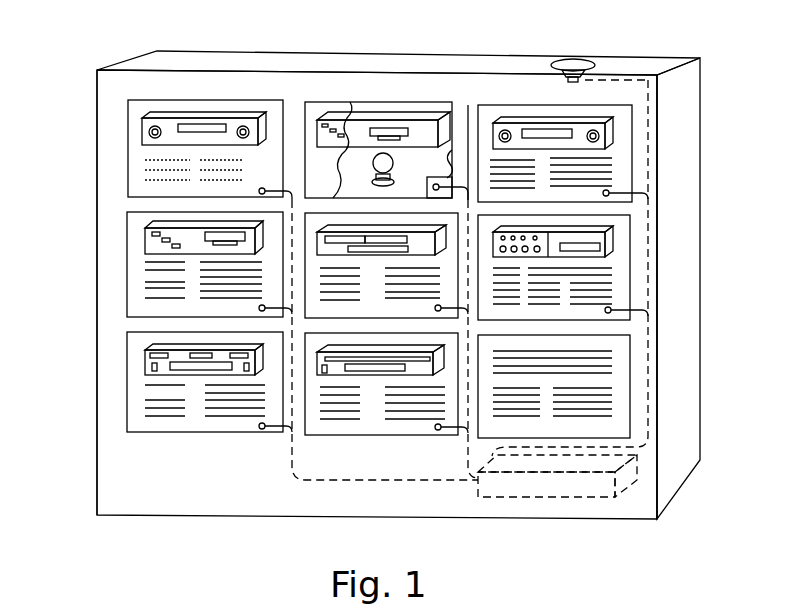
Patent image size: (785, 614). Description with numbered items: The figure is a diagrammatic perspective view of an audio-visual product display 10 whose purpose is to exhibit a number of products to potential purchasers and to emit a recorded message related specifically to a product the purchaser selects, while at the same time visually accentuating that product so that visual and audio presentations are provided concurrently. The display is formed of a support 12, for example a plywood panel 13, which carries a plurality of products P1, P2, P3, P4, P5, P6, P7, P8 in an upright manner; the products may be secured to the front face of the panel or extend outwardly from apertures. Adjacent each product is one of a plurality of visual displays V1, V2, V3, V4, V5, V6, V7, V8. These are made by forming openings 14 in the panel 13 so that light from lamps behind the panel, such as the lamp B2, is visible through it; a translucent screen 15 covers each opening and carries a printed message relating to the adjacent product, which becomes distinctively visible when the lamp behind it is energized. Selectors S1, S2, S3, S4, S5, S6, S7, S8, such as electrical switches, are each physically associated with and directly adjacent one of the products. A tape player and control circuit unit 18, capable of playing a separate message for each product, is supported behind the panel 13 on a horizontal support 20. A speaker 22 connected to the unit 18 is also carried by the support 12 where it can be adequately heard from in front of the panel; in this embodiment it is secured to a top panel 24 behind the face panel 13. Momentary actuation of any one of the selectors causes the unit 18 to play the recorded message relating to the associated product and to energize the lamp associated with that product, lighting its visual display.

The product display 10 is at (118, 52).
The support 12 is at (107, 100).
The plywood panel 13 is at (660, 128).
The openings 14 is at (455, 140).
The translucent screen 15 is at (350, 106).
The tape player and control circuit unit 18 is at (573, 492).
The horizontal support 20 is at (668, 478).
The speaker 22 is at (575, 62).
The top panel 24 is at (660, 65).
The product P1 is at (233, 115).
The product P2 is at (422, 113).
The product P3 is at (547, 120).
The product P4 is at (145, 242).
The product P5 is at (360, 256).
The product P6 is at (607, 240).
The product P7 is at (145, 360).
The product P8 is at (350, 376).
The visual display V1 is at (127, 174).
The visual display V2 is at (330, 182).
The visual display V3 is at (557, 184).
The visual display V4 is at (135, 293).
The visual display V5 is at (382, 314).
The visual display V6 is at (622, 272).
The visual display V7 is at (130, 403).
The visual display V8 is at (389, 420).
The selector S1 is at (264, 188).
The selector S2 is at (435, 184).
The selector S3 is at (603, 193).
The selector S4 is at (259, 308).
The selector S5 is at (435, 309).
The selector S6 is at (605, 311).
The selector S7 is at (262, 430).
The selector S8 is at (438, 430).
The lamp B2 is at (378, 170).